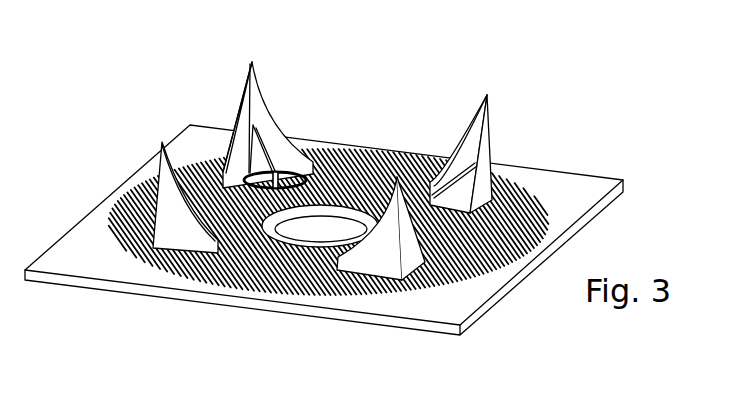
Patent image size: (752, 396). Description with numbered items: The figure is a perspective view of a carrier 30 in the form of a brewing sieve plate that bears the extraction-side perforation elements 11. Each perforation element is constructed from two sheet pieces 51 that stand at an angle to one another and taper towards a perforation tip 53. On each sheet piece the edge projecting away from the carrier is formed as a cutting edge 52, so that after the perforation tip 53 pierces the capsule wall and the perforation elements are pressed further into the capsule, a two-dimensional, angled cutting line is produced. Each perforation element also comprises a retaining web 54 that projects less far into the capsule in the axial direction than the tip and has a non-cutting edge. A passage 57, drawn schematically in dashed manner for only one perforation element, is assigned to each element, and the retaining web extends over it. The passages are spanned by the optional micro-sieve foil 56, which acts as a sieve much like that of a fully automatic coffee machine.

The carrier 30 is at (97, 225).
The micro-sieve foil 56 is at (367, 177).
The cutting edge 52 is at (279, 101).
The perforation element 11 is at (240, 117).
The retaining web 54 is at (263, 152).
The passage 57 is at (287, 173).
The perforation tip 53 is at (514, 144).
The sheet piece 51 is at (485, 188).